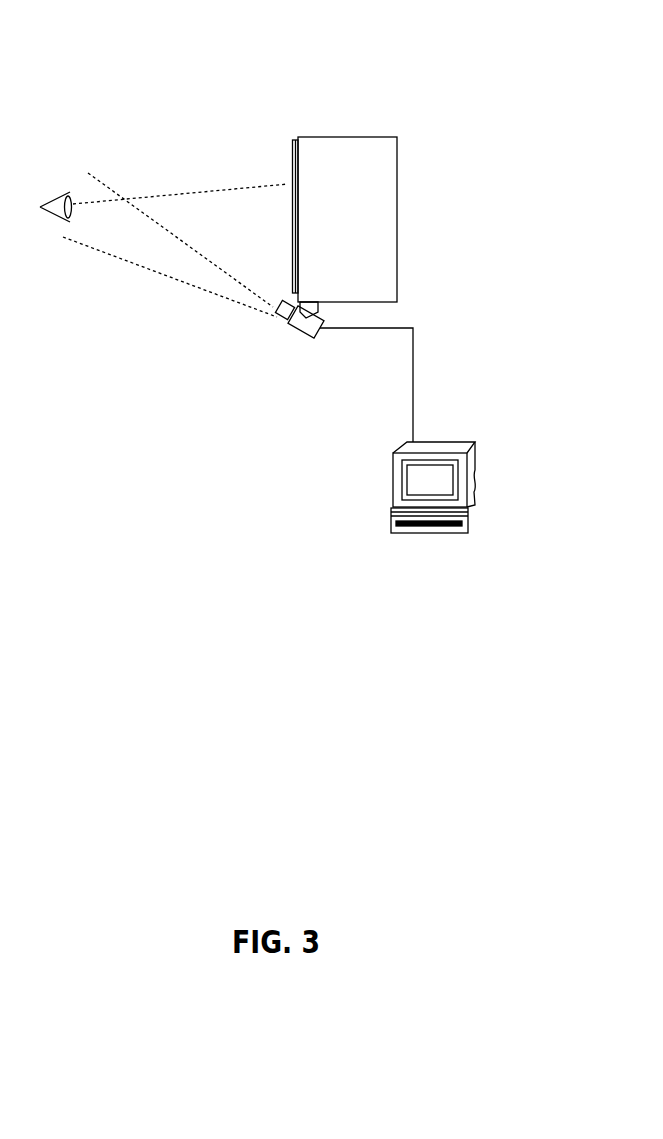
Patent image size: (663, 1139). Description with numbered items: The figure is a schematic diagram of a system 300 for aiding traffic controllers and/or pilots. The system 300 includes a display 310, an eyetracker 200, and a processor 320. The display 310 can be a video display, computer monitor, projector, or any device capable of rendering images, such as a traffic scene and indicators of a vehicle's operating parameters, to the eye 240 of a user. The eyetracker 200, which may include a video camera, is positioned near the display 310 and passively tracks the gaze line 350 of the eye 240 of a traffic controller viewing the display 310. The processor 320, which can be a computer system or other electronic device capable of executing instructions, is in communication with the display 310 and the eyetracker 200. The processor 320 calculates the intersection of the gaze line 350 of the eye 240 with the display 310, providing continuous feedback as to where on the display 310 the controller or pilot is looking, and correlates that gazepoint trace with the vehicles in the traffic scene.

The system 300 is at (293, 530).
The display 310 is at (293, 146).
The gaze line 350 is at (223, 189).
The eye 240 is at (72, 199).
The eyetracker 200 is at (297, 338).
The processor 320 is at (477, 457).